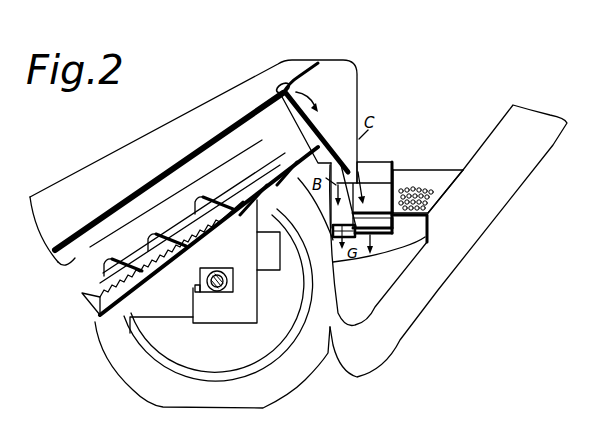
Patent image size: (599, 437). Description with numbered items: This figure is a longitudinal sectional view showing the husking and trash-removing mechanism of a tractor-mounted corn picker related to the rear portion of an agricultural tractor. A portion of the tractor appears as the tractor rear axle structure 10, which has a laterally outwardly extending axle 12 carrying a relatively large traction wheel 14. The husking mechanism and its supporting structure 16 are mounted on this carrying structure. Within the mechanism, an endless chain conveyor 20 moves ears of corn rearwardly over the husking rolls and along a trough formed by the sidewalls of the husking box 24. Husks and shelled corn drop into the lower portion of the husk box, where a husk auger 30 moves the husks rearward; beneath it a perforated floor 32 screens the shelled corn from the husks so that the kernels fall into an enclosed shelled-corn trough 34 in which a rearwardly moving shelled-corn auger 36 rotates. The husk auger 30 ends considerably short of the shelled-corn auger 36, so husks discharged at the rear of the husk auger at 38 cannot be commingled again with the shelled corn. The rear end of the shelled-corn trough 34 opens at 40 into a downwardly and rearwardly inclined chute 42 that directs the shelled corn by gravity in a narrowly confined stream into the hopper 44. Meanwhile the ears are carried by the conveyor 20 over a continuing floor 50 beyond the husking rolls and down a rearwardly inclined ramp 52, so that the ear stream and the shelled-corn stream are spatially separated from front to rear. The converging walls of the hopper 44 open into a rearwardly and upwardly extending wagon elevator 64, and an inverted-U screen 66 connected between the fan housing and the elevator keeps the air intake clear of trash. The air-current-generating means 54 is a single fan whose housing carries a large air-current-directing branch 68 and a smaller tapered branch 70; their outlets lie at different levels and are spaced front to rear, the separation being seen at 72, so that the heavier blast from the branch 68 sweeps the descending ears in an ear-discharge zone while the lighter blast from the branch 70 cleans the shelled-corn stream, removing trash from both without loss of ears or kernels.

The tractor rear axle structure 10 is at (250, 298).
The axle 12 is at (195, 288).
The traction wheel 14 is at (287, 387).
The husking mechanism 16 is at (138, 131).
The endless chain conveyor 20 is at (290, 83).
The husking box 24 is at (58, 272).
The husk auger 30 is at (81, 295).
The perforated floor 32 is at (97, 310).
The shelled-corn trough 34 is at (282, 180).
The shelled-corn auger 36 is at (279, 219).
The husk discharge 38 is at (265, 166).
The trough opening 40 is at (345, 139).
The chute 42 is at (360, 158).
The hopper 44 is at (381, 317).
The floor 50 is at (260, 99).
The ramp 52 is at (362, 168).
The air-current-generating means 54 is at (405, 162).
The wagon elevator 64 is at (478, 231).
The screen 66 is at (433, 170).
The air-current-directing branch 68 is at (428, 191).
The air-current-directing branch 70 is at (333, 236).
The fore and aft separation 72 is at (391, 228).